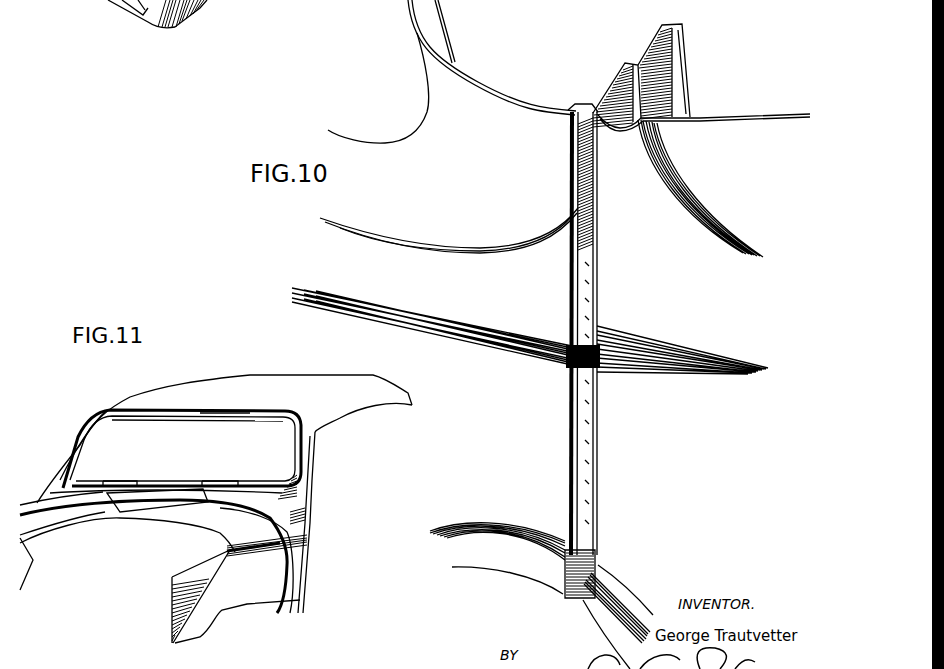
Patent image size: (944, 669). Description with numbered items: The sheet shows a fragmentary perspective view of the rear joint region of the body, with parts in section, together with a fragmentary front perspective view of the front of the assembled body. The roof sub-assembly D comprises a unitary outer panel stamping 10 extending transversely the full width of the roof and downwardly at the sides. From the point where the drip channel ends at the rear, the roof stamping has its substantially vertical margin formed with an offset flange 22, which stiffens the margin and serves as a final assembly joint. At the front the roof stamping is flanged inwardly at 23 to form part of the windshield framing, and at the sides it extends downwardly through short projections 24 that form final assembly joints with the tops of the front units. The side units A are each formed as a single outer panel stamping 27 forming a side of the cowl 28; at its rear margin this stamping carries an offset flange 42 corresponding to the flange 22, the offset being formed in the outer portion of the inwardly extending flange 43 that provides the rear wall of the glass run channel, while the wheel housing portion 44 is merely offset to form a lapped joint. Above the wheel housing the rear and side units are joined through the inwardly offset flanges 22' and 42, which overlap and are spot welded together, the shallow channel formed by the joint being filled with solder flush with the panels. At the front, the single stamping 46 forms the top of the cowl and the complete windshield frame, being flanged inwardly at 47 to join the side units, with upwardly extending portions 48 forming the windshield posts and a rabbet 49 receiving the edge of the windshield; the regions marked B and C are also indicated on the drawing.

In FIG. 11, the outer panel stamping 10 is at (245, 381).
In FIG. 10, the offset flange 22 is at (583, 317).
In FIG. 10, the inwardly offset flange 22' is at (541, 596).
In FIG. 11, the inward flange 23 is at (177, 413).
In FIG. 11, the short projections 24 is at (90, 416).
In FIG. 10, the outer panel stamping 27 is at (497, 199).
In FIG. 11, the outer panel stamping 27 is at (306, 514).
In FIG. 11, the cowl 28 is at (253, 605).
In FIG. 10, the offset flange 42 is at (590, 110).
In FIG. 10, the inwardly extending flange 43 is at (648, 46).
In FIG. 10, the wheel housing portion 44 is at (191, 14).
In FIG. 11, the front unit stamping 46 is at (172, 513).
In FIG. 11, the inward flange 47 is at (222, 546).
In FIG. 11, the upwardly extending portions 48 is at (70, 458).
In FIG. 11, the rabbet 49 is at (224, 411).
In FIG. 10, the side units A is at (515, 104).
In FIG. 11, the side units A is at (308, 566).
In FIG. 11, the panel B is at (105, 511).
In FIG. 10, the panel C is at (654, 450).
In FIG. 10, the roof sub-assembly D is at (757, 118).
In FIG. 11, the roof sub-assembly D is at (372, 406).